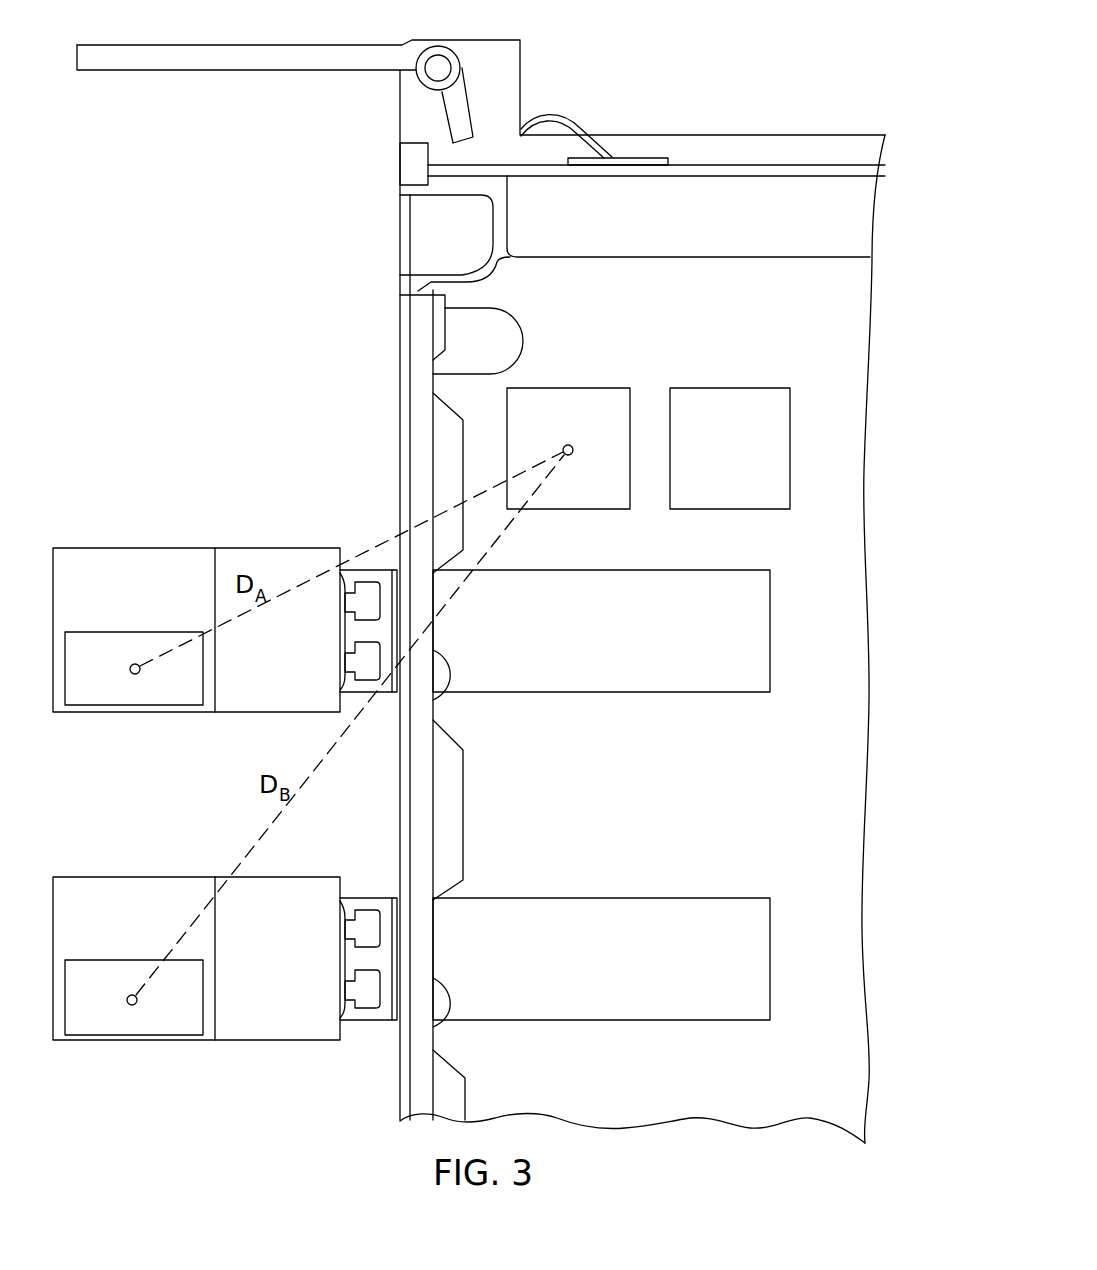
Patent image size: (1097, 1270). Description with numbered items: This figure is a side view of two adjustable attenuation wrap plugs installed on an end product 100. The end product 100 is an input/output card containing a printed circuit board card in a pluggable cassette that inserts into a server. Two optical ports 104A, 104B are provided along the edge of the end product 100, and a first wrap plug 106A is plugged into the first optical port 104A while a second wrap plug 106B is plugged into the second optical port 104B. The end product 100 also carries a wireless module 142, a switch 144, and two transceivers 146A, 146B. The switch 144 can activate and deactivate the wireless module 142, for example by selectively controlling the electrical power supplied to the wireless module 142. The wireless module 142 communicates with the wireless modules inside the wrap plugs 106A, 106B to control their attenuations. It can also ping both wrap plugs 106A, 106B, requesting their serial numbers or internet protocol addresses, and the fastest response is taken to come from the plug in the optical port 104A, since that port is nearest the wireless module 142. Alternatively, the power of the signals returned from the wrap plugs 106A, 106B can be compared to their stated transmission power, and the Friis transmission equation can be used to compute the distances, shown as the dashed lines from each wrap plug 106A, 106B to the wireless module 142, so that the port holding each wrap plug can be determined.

The end product 100 is at (676, 56).
The optical port 104A is at (370, 570).
The optical port 104B is at (370, 898).
The wrap plug 106A is at (146, 540).
The wrap plug 106B is at (146, 868).
The wireless module 142 is at (591, 431).
The switch 144 is at (751, 431).
The transceiver 146A is at (642, 638).
The transceiver 146B is at (642, 968).